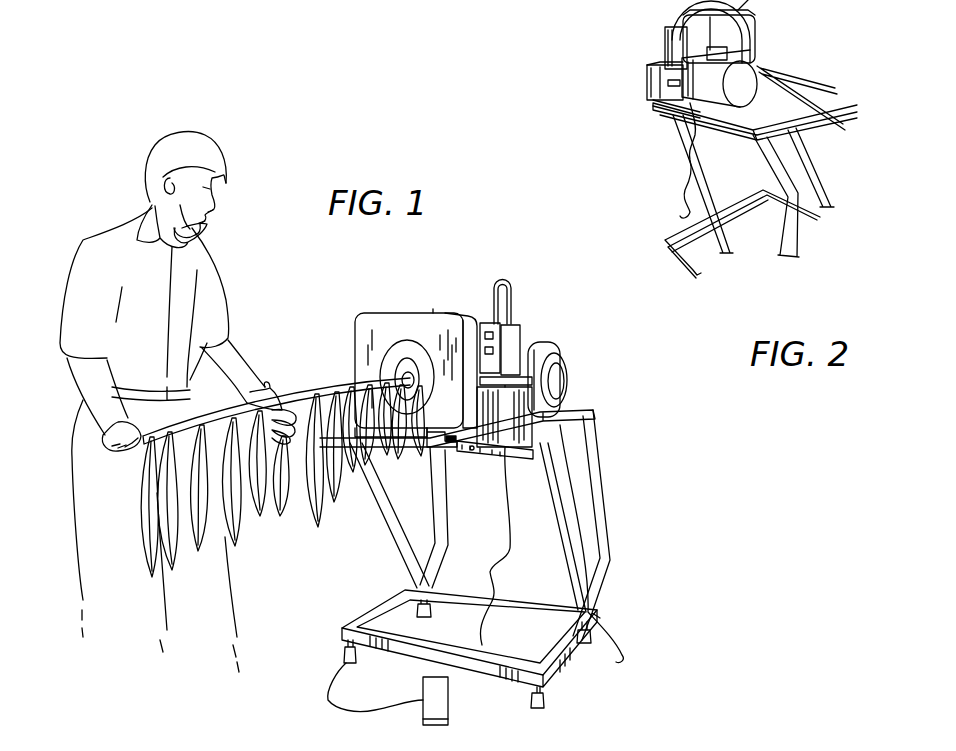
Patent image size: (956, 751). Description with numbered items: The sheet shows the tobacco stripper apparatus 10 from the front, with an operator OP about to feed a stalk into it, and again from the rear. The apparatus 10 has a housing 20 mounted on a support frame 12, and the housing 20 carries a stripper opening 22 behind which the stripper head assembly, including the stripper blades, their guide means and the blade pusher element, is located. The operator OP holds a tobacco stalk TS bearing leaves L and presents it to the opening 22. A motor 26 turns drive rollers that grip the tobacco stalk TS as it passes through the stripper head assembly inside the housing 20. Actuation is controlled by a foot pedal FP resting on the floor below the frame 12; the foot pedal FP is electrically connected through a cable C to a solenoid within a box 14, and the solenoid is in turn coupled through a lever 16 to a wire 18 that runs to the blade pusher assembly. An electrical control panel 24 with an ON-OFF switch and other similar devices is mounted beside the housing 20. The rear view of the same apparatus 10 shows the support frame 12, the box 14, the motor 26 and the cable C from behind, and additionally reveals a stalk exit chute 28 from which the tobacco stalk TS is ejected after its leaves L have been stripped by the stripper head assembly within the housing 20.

In FIG. 1, the tobacco stripper apparatus 10 is at (444, 303).
In FIG. 1, the support frame 12 is at (612, 515).
In FIG. 2, the support frame 12 is at (773, 152).
In FIG. 1, the box 14 is at (512, 450).
In FIG. 2, the box 14 is at (647, 80).
In FIG. 1, the lever 16 is at (478, 457).
In FIG. 1, the wire 18 is at (449, 452).
In FIG. 1, the housing 20 is at (390, 345).
In FIG. 1, the stripper opening 22 is at (405, 419).
In FIG. 1, the electrical control panel 24 is at (520, 324).
In FIG. 1, the motor 26 is at (560, 370).
In FIG. 2, the motor 26 is at (719, 78).
In FIG. 2, the stalk exit chute 28 is at (763, 58).
In FIG. 1, the operator OP is at (154, 322).
In FIG. 1, the tobacco stalk TS is at (336, 386).
In FIG. 2, the tobacco stalk TS is at (857, 115).
In FIG. 1, the leaves L is at (296, 518).
In FIG. 1, the cable C is at (503, 566).
In FIG. 2, the cable C is at (740, 123).
In FIG. 1, the foot pedal FP is at (450, 706).